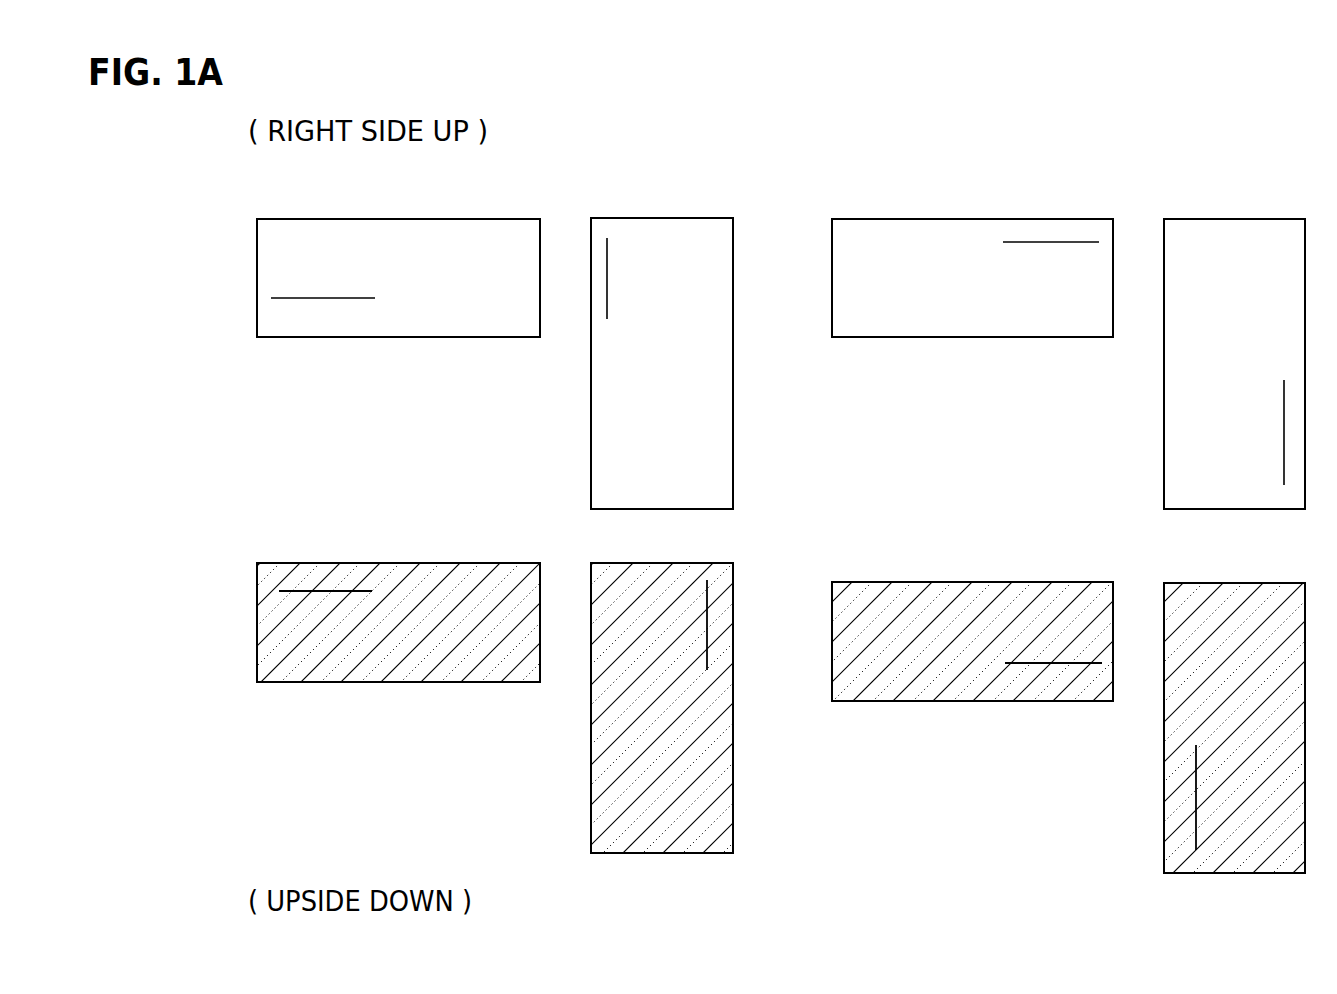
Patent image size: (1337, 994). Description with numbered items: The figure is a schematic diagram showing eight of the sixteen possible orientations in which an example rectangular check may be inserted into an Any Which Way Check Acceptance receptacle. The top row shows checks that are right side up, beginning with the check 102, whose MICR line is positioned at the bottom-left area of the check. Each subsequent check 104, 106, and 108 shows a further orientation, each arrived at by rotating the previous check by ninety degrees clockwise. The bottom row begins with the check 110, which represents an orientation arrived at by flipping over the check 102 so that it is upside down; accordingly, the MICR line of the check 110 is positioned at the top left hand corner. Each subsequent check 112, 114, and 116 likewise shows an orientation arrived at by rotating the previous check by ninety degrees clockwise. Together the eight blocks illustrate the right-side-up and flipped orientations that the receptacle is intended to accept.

The check 102 is at (424, 219).
The check 104 is at (651, 218).
The check 106 is at (997, 219).
The check 108 is at (1234, 219).
The check 110 is at (383, 563).
The check 112 is at (660, 563).
The check 114 is at (1005, 582).
The check 116 is at (1235, 583).